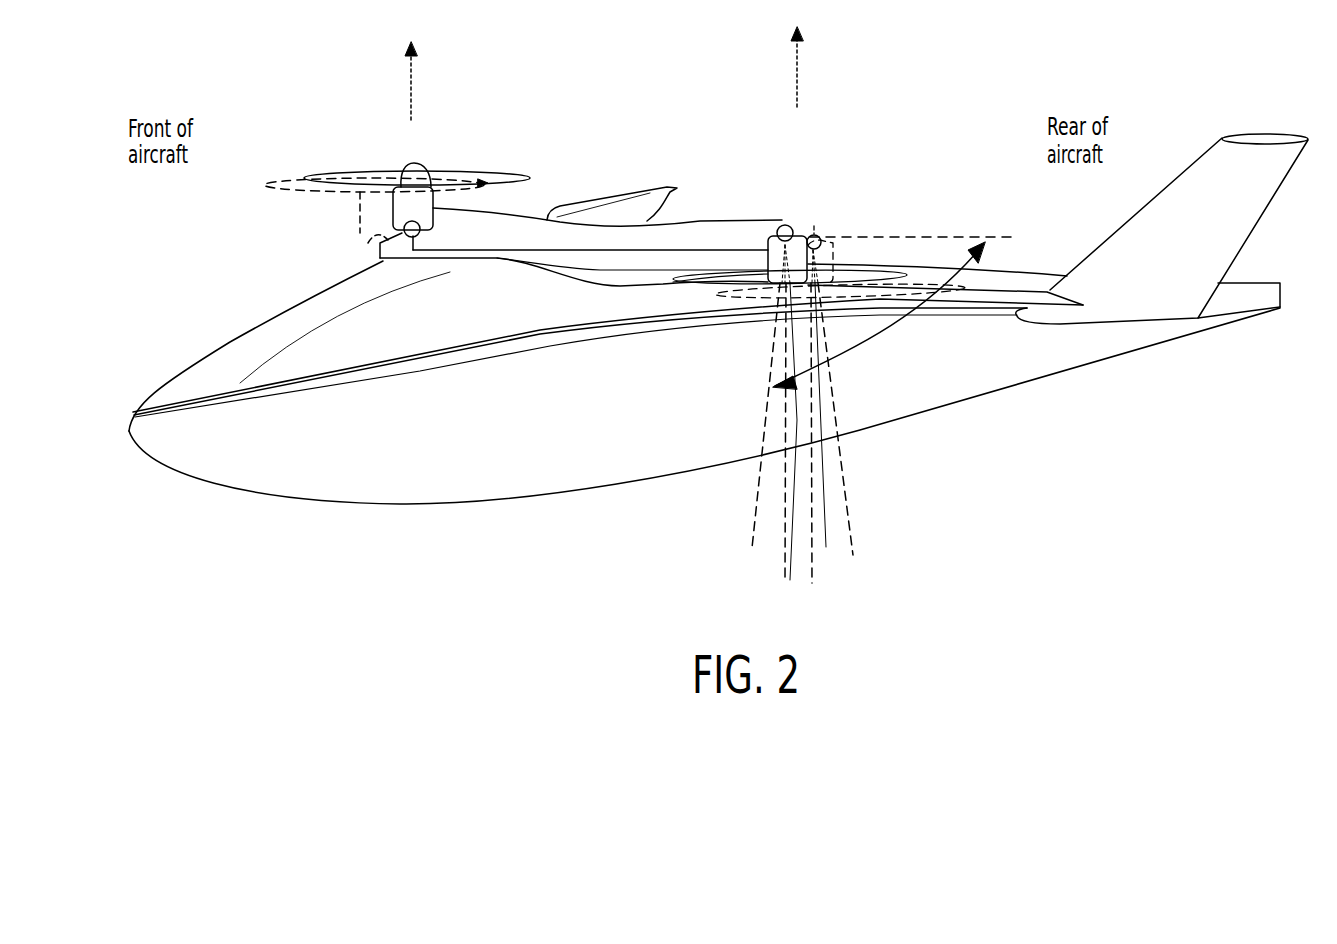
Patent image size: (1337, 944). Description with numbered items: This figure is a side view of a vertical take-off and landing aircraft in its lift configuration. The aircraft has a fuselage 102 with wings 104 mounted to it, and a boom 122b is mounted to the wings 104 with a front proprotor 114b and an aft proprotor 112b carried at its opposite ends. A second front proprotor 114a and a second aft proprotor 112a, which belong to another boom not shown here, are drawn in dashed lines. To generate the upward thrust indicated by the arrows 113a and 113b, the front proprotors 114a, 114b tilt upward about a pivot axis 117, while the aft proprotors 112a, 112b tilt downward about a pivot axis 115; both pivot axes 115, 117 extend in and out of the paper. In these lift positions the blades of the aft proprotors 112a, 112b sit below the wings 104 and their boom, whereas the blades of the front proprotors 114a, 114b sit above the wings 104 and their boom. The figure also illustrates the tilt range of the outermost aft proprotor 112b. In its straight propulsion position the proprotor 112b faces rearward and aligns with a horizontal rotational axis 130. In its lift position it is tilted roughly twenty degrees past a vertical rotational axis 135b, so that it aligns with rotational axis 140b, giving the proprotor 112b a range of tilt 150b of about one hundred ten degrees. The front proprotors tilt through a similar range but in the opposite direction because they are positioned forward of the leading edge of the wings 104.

The fuselage 102 is at (520, 418).
The wings 104 is at (643, 213).
The aft proprotor 112a is at (830, 253).
The aft proprotor 112b is at (807, 228).
The upward thrust arrow 113a is at (413, 90).
The upward thrust arrow 113b is at (798, 77).
The front proprotor 114a is at (362, 210).
The front proprotor 114b is at (417, 197).
The pivot axis 115 is at (788, 227).
The pivot axis 117 is at (405, 232).
The boom 122b is at (467, 250).
The horizontal rotational axis 130 is at (925, 237).
The vertical rotational axis 135b is at (822, 522).
The rotational axis 140b is at (797, 397).
The range of tilt 150b is at (910, 327).